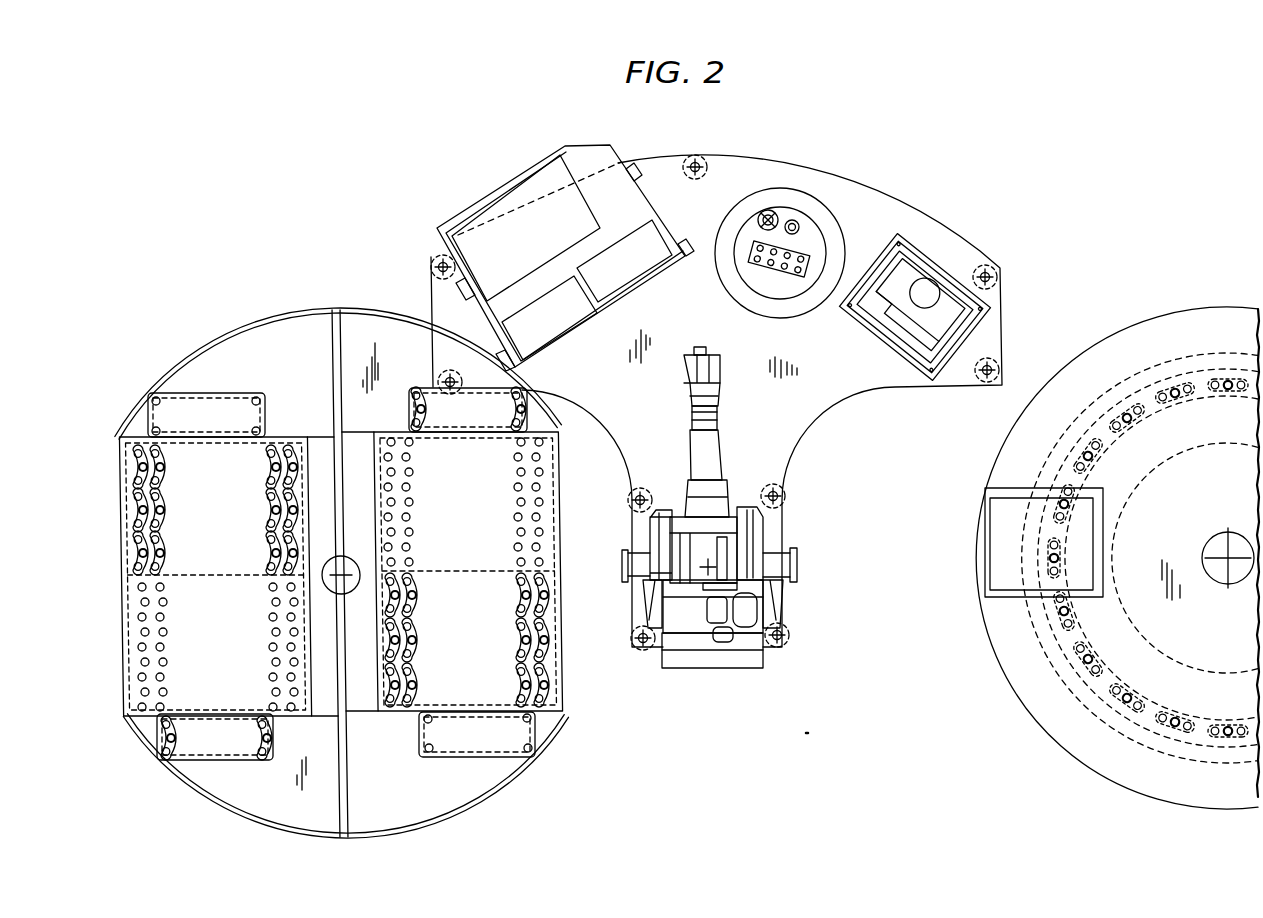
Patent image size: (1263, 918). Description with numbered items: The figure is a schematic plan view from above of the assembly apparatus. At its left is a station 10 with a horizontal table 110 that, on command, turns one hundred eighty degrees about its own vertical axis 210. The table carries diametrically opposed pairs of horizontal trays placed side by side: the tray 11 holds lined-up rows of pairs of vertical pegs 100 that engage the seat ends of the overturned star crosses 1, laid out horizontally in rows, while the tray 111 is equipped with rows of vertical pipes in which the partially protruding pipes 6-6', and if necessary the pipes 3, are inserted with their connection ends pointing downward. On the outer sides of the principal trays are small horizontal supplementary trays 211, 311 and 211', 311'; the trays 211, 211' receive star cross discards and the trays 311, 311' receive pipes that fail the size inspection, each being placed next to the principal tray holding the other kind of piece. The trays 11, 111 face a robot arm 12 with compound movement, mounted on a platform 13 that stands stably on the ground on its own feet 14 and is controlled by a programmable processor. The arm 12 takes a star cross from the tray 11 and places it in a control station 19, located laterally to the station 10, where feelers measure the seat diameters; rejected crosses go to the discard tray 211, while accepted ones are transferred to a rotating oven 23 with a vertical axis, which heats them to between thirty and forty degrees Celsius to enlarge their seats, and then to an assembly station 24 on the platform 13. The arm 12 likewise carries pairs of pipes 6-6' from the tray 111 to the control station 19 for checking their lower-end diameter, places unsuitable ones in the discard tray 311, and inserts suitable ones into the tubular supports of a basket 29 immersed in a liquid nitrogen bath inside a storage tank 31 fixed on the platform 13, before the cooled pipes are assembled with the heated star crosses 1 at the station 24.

The station 10 is at (341, 566).
The horizontal table 110 is at (433, 798).
The vertical axis 210 is at (370, 572).
The horizontal tray 11 is at (555, 662).
The horizontal tray 111 is at (552, 477).
The supplementary tray 311' is at (187, 390).
The discard tray 211 is at (508, 397).
The supplementary tray 211' is at (199, 764).
The discard tray 311 is at (498, 752).
The star cross 1 is at (275, 545).
The vertical pegs 100 is at (550, 700).
The pipes 3 is at (518, 503).
The pipes 6-6' is at (385, 564).
The platform 13 is at (795, 430).
The feet 14 is at (643, 494).
The control station 19 is at (480, 194).
The storage tank 31 is at (817, 206).
The basket 29 is at (755, 268).
The assembly station 24 is at (933, 260).
The robot arm 12 is at (725, 437).
The rotating oven 23 is at (1150, 314).